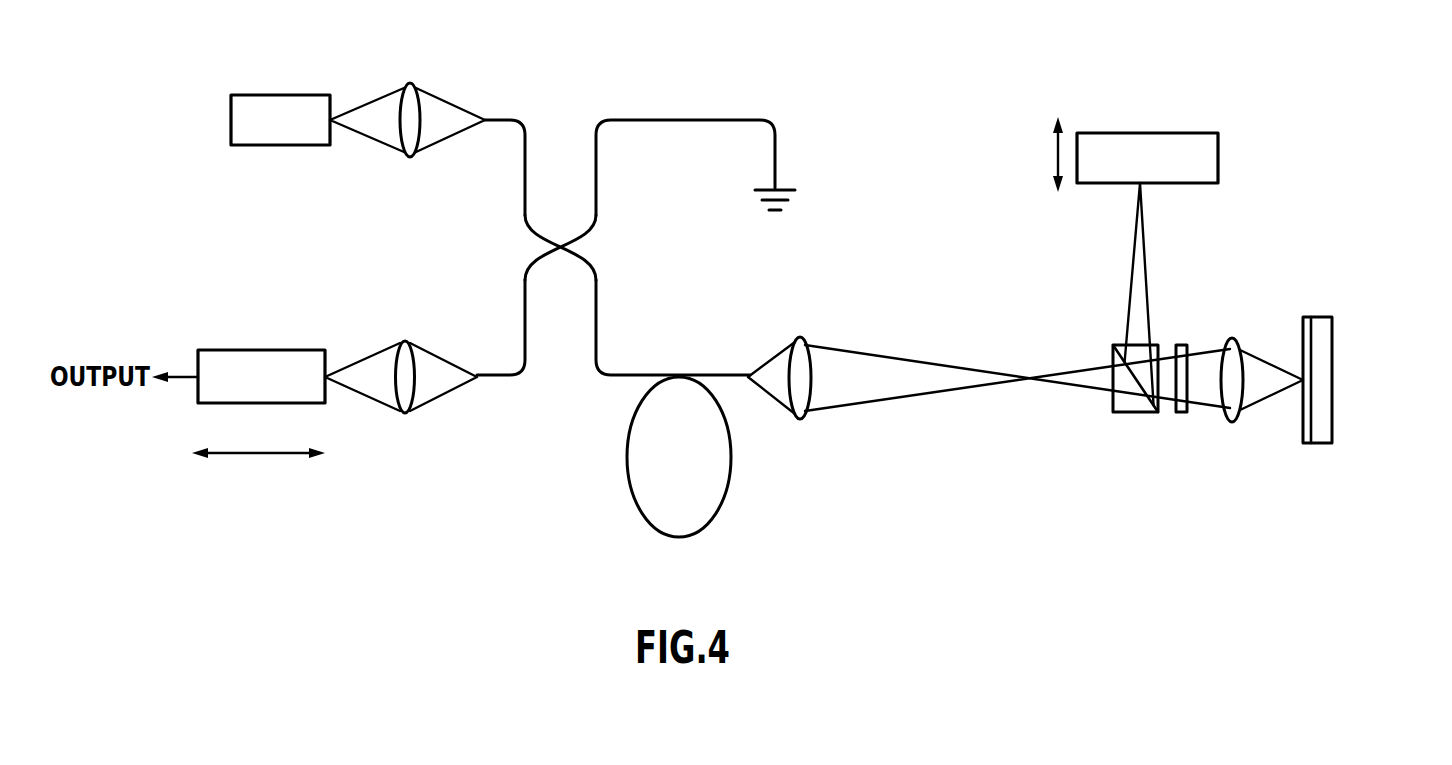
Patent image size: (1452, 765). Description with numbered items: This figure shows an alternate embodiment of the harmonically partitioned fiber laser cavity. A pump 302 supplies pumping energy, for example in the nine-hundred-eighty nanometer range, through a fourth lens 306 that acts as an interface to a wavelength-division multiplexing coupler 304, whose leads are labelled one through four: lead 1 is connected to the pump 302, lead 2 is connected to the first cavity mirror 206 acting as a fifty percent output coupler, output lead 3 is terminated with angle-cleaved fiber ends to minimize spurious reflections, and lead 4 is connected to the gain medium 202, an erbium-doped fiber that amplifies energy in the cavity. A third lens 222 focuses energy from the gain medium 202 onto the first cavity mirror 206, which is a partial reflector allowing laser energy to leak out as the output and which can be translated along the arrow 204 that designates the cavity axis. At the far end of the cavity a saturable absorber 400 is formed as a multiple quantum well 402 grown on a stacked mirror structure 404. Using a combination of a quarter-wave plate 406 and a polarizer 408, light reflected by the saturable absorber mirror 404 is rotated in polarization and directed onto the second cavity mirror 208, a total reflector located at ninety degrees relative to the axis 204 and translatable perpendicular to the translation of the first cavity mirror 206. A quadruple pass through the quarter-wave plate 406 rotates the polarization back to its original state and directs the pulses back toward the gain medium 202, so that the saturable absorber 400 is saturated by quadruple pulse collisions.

The pump 302 is at (270, 95).
The fourth lens 306 is at (410, 83).
The wavelength-division multiplexing coupler 304 is at (636, 230).
The lead 1 is at (505, 150).
The lead 2 is at (501, 327).
The output lead 3 is at (695, 150).
The lead 4 is at (673, 327).
The first cavity mirror 206 is at (280, 350).
The axis 204 is at (267, 454).
The third lens 222 is at (409, 408).
The gain medium 202 is at (727, 497).
The second cavity mirror 208 is at (1104, 133).
The polarizer 408 is at (1149, 413).
The quarter-wave plate 406 is at (1181, 413).
The multiple quantum well 402 is at (1379, 258).
The stacked mirror structure 404 is at (1333, 380).
The saturable absorber 400 is at (1321, 352).